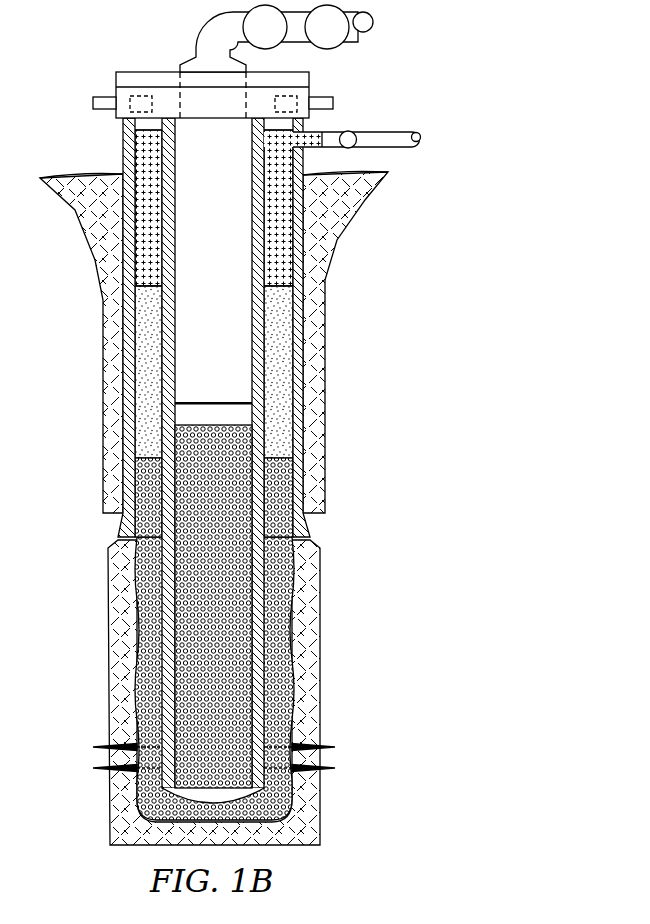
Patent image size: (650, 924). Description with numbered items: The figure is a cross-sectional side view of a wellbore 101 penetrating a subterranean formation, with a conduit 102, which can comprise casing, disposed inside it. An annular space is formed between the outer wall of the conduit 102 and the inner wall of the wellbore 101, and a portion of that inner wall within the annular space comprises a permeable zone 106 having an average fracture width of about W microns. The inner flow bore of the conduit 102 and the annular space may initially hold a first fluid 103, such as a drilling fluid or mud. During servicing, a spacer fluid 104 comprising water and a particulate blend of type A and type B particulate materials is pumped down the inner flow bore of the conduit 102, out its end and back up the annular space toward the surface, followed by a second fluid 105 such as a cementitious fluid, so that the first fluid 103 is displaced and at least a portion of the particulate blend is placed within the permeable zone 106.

The wellbore 101 is at (123, 402).
The conduit 102 is at (158, 443).
The first fluid 103 is at (282, 228).
The spacer fluid 104 is at (310, 382).
The second fluid 105 is at (233, 602).
The permeable zone 106 is at (86, 737).